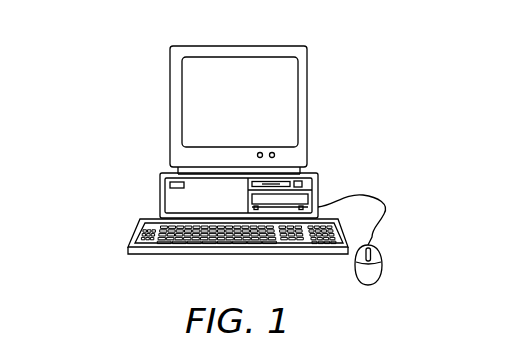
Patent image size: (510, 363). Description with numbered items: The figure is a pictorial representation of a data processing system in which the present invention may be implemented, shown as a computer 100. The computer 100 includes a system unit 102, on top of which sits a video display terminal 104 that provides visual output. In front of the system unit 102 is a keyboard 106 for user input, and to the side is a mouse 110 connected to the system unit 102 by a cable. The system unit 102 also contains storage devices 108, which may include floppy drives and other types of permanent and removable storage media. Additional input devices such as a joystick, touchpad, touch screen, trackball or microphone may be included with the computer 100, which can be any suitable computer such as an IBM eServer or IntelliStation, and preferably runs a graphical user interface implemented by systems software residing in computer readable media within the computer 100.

The computer 100 is at (115, 97).
The system unit 102 is at (160, 193).
The video display terminal 104 is at (307, 105).
The keyboard 106 is at (155, 257).
The storage devices 108 is at (320, 190).
The mouse 110 is at (368, 285).